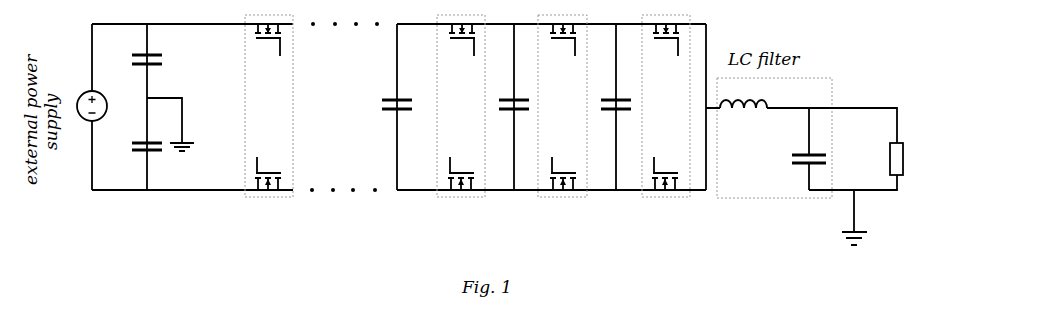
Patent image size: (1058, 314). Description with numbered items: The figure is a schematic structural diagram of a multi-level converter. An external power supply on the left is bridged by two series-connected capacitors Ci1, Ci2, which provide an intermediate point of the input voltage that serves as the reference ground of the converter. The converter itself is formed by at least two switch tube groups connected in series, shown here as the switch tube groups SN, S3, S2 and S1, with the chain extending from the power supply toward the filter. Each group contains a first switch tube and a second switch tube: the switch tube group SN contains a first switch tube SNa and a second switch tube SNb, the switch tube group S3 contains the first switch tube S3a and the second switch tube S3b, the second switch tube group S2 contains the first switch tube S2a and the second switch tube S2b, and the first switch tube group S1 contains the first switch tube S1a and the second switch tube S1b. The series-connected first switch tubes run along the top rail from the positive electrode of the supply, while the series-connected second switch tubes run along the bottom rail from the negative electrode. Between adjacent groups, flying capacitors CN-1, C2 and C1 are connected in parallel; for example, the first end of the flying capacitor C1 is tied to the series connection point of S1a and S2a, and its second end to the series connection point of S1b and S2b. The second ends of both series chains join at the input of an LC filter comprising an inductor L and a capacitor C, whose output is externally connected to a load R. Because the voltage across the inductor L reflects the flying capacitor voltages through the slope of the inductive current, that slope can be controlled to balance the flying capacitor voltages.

The capacitor Ci1 is at (133, 67).
The capacitor Ci2 is at (133, 149).
The flying capacitor CN-1 is at (373, 107).
The flying capacitor C2 is at (497, 107).
The flying capacitor C1 is at (598, 107).
The switch tube group SN is at (250, 127).
The first switch tube SNa is at (268, 51).
The second switch tube SNb is at (267, 162).
The switch tube group S3 is at (444, 127).
The first switch tube S3a is at (462, 51).
The second switch tube S3b is at (461, 162).
The second switch tube group S2 is at (547, 127).
The first switch tube S2a is at (563, 51).
The second switch tube S2b is at (563, 162).
The first switch tube group S1 is at (649, 127).
The first switch tube S1a is at (666, 51).
The second switch tube S1b is at (665, 162).
The inductor L is at (743, 117).
The capacitor C is at (821, 149).
The load R is at (908, 159).